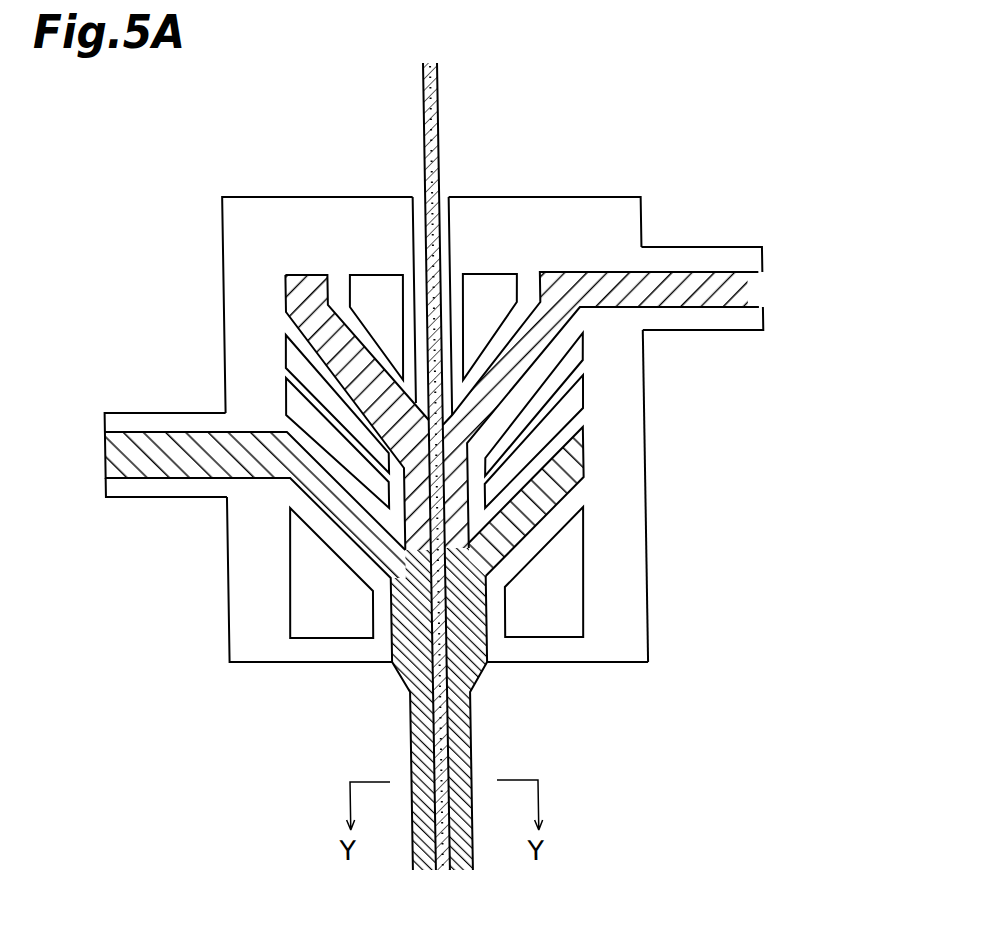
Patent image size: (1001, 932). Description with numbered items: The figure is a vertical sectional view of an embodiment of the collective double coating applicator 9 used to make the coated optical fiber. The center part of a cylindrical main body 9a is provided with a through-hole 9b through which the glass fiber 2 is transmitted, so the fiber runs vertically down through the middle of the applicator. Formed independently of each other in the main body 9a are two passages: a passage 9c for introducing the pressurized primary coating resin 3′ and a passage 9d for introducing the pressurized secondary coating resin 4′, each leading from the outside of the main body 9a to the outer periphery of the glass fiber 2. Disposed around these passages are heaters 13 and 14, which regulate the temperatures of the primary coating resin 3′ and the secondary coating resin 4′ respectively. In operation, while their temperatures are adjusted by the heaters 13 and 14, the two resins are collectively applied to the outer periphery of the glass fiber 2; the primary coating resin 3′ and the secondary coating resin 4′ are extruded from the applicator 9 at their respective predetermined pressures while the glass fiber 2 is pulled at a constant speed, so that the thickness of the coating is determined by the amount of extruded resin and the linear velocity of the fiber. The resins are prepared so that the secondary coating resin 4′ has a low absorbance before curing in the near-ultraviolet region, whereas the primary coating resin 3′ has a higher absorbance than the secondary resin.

The glass fiber 2 is at (444, 110).
The primary coating resin 3′ is at (795, 293).
The secondary coating resin 4′ is at (86, 462).
The collective double coating applicator 9 is at (624, 183).
The cylindrical main body 9a is at (646, 588).
The through-hole 9b is at (419, 212).
The passage 9c is at (752, 278).
The passage 9d is at (108, 438).
The heater 13 is at (503, 278).
The heater 14 is at (579, 557).